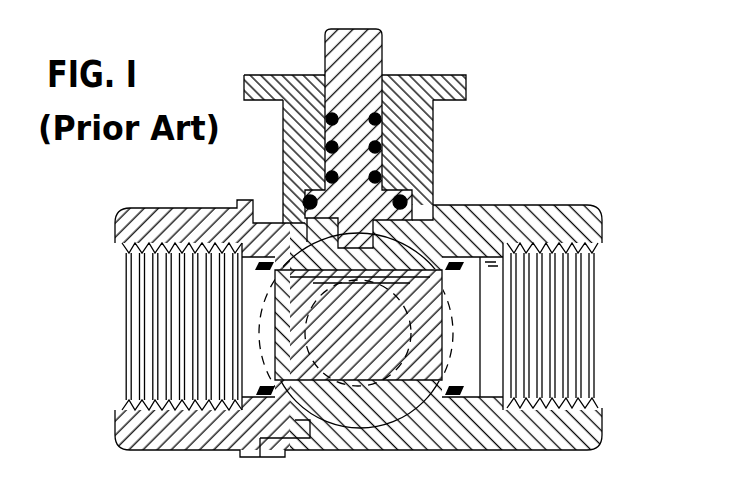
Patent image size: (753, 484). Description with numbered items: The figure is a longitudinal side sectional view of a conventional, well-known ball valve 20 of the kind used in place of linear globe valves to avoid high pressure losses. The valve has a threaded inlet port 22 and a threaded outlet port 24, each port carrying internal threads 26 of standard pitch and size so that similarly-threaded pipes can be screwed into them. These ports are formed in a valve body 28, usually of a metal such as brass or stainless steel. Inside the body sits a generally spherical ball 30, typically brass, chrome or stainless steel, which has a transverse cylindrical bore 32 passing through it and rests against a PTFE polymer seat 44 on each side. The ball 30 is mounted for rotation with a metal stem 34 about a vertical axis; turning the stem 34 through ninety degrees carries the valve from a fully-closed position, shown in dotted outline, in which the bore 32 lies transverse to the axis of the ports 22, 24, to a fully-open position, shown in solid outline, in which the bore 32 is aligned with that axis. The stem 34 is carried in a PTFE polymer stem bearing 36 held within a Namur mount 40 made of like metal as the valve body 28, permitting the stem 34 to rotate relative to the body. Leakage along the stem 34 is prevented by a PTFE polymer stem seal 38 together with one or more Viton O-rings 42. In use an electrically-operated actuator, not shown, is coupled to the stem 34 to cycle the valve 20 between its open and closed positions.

The ball valve 20 is at (466, 183).
The inlet port 22 is at (111, 362).
The outlet port 24 is at (609, 348).
The internal threads 26 is at (583, 273).
The valve body 28 is at (510, 212).
The ball 30 is at (403, 410).
The cylindrical bore 32 is at (308, 378).
The stem 34 is at (362, 55).
The stem bearing 36 is at (374, 117).
The stem seal 38 is at (312, 197).
The Namur mount 40 is at (466, 86).
The O-rings 42 is at (382, 177).
The seat 44 is at (264, 375).